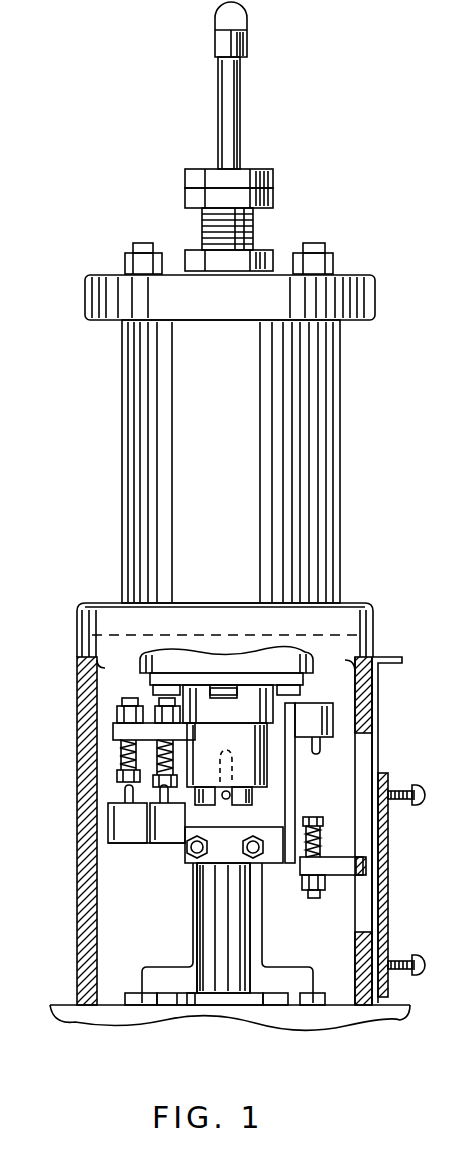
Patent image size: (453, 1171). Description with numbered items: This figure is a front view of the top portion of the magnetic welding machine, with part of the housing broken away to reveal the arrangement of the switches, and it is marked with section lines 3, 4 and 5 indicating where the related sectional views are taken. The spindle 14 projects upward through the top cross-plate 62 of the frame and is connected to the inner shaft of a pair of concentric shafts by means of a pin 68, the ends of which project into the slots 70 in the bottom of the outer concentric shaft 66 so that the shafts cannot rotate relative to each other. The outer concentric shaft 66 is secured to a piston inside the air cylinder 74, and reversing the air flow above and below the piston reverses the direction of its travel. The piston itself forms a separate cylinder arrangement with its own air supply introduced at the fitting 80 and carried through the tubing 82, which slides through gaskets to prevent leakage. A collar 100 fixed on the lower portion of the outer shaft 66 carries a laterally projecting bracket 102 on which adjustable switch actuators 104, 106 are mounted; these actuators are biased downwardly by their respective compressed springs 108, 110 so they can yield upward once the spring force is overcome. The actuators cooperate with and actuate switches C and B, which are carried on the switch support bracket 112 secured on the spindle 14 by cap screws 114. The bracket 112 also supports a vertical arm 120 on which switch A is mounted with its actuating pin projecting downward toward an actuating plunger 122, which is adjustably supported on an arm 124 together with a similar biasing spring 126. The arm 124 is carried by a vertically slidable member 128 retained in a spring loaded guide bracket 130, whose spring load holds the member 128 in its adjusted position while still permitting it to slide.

The section line 3- 3 is at (190, 22).
The section line 4- 4 is at (53, 734).
The section line 5- 5 is at (40, 790).
The spindle 14 is at (235, 955).
The top cross-plate 62 is at (72, 1010).
The outer concentric shaft 66 is at (205, 722).
The pin 68 is at (272, 790).
The slots 70 is at (215, 813).
The air cylinder 74 is at (233, 468).
The fitting 80 is at (213, 46).
The tubing 82 is at (232, 118).
The collar 100 is at (266, 775).
The bracket 102 is at (113, 738).
The switch actuator 104 is at (118, 775).
The switch actuator 106 is at (158, 842).
The compressed spring 108 is at (77, 660).
The compressed spring 110 is at (172, 757).
The switch support bracket 112 is at (225, 850).
The cap screws 114 is at (222, 862).
The vertical arm 120 is at (297, 759).
The actuating plunger 122 is at (310, 818).
The arm 124 is at (345, 872).
The biasing spring 126 is at (318, 848).
The vertically slidable member 128 is at (382, 680).
The spring loaded guide bracket 130 is at (388, 921).
The switch A is at (316, 712).
The switch B is at (172, 843).
The switch C is at (118, 845).